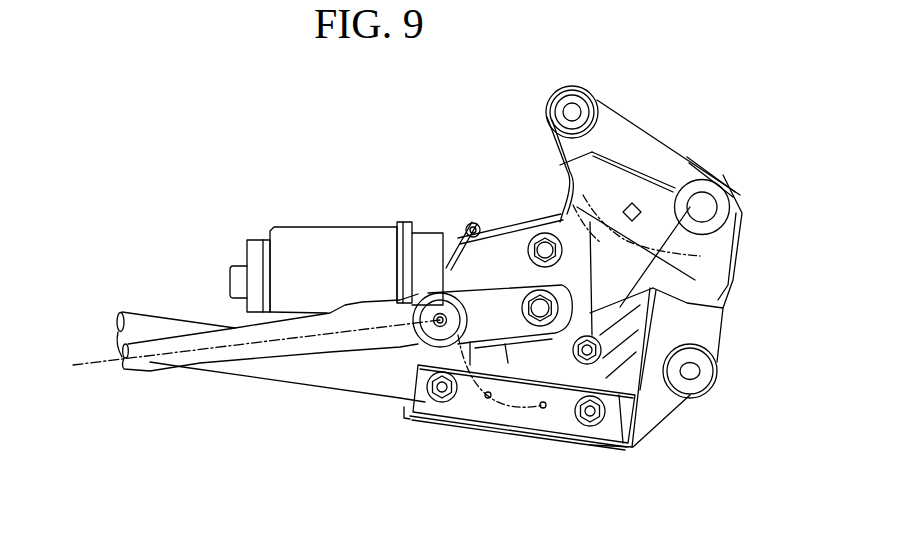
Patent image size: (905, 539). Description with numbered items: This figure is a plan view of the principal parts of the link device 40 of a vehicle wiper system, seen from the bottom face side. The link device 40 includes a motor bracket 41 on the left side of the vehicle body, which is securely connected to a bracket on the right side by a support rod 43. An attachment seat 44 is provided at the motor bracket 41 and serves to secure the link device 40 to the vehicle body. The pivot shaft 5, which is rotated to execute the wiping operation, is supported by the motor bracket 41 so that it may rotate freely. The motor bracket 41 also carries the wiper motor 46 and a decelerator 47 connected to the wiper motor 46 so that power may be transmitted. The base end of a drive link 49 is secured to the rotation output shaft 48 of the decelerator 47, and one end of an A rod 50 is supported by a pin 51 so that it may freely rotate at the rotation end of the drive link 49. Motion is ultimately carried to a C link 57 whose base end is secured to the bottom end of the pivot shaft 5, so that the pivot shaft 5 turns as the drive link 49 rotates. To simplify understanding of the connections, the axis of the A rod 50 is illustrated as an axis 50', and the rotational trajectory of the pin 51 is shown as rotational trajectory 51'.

The pivot shaft 5 is at (707, 203).
The link device 40 is at (358, 435).
The motor bracket 41 is at (667, 315).
The support rod 43 is at (388, 390).
The attachment seat 44 is at (583, 103).
The wiper motor 46 is at (337, 248).
The decelerator 47 is at (493, 257).
The rotation output shaft 48 is at (540, 314).
The drive link 49 is at (493, 322).
The A rod 50 is at (176, 303).
The axis of the A rod 50' is at (274, 368).
The pin 51 is at (318, 267).
The rotational trajectory of the pin 51' is at (753, 255).
The C link 57 is at (648, 233).